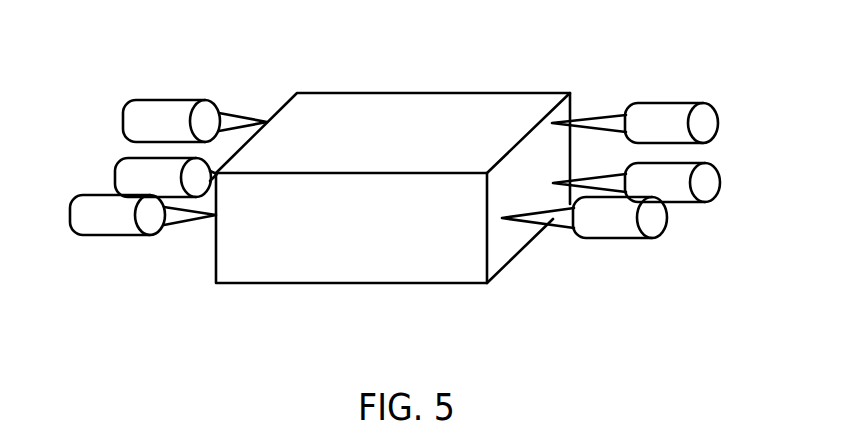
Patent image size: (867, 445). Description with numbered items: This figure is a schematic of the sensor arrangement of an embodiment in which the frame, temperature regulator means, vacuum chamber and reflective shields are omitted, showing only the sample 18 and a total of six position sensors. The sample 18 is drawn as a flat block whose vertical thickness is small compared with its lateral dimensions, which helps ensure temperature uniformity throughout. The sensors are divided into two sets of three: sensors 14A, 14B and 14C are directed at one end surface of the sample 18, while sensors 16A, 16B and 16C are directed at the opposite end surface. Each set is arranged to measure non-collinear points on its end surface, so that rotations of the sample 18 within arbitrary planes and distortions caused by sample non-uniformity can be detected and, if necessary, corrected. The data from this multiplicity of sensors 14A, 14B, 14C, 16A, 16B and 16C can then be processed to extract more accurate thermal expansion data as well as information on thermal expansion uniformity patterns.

The sample 18 is at (418, 105).
The sensor 14A is at (130, 112).
The sensor 14B is at (123, 172).
The sensor 14C is at (80, 225).
The sensor 16A is at (710, 113).
The sensor 16B is at (713, 177).
The sensor 16C is at (655, 227).